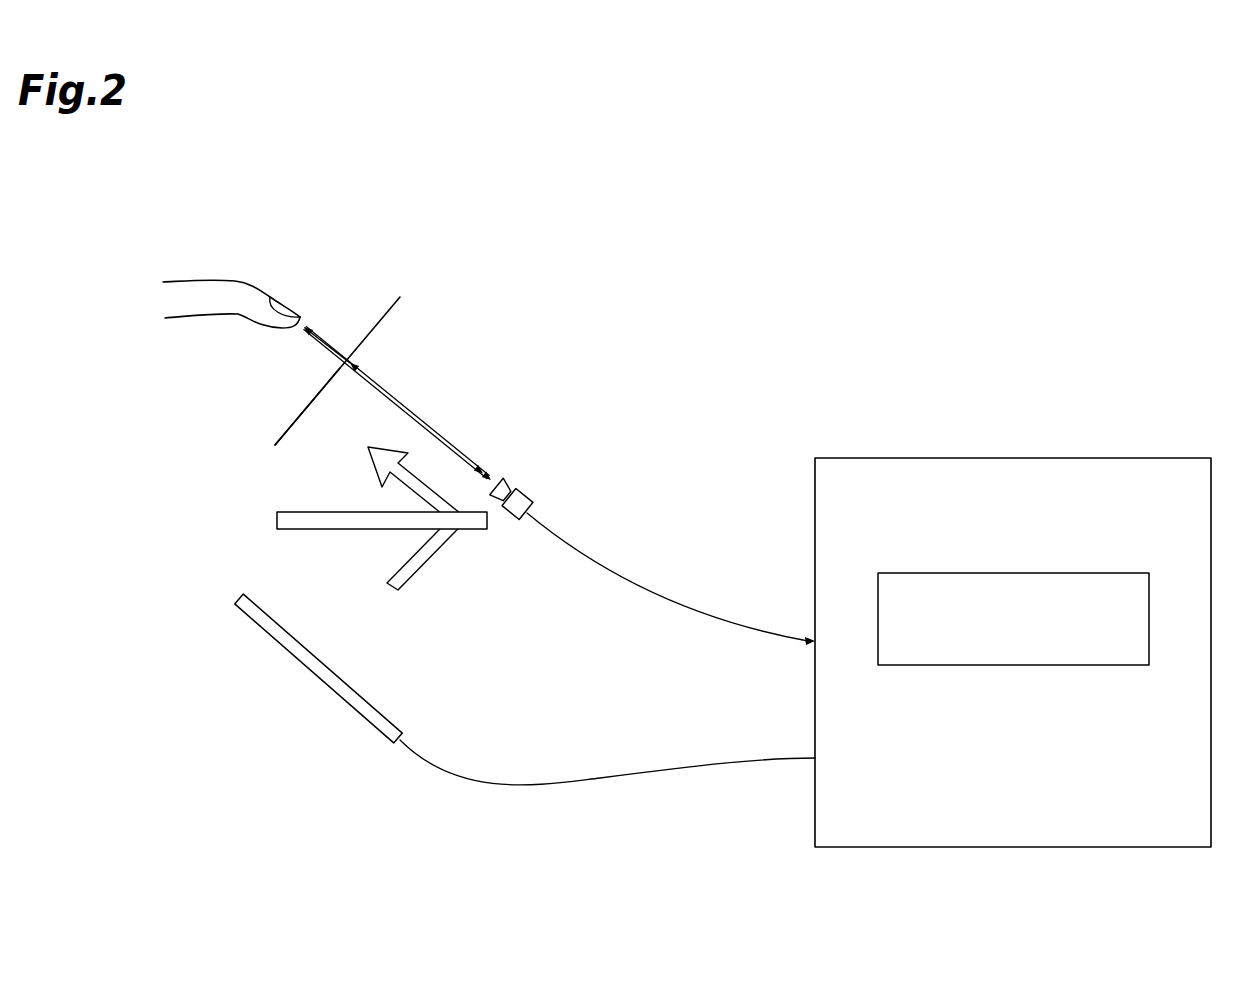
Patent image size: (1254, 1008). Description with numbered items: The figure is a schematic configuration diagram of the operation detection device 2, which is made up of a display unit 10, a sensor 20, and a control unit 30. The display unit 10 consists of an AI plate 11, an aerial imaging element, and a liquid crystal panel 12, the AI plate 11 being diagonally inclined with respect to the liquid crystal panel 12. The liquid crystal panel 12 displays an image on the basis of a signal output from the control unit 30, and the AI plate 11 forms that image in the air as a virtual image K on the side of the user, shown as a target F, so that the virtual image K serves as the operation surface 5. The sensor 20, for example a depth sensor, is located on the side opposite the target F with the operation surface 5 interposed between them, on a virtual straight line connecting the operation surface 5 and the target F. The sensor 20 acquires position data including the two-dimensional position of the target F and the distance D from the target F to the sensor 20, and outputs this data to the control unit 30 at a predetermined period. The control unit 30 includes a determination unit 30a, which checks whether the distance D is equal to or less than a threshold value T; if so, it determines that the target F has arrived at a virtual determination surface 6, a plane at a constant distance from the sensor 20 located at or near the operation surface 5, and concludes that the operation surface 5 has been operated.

The operation detection device 2 is at (1161, 243).
The target F is at (223, 281).
The operation surface 5 is at (381, 317).
The virtual image K is at (337, 371).
The determination surface 6 is at (286, 436).
The threshold value T is at (432, 418).
The distance D is at (380, 397).
The display unit 10 is at (507, 612).
The AI plate 11 is at (468, 531).
The liquid crystal panel 12 is at (382, 707).
The sensor 20 is at (528, 492).
The control unit 30 is at (1032, 458).
The determination unit 30a is at (1007, 665).